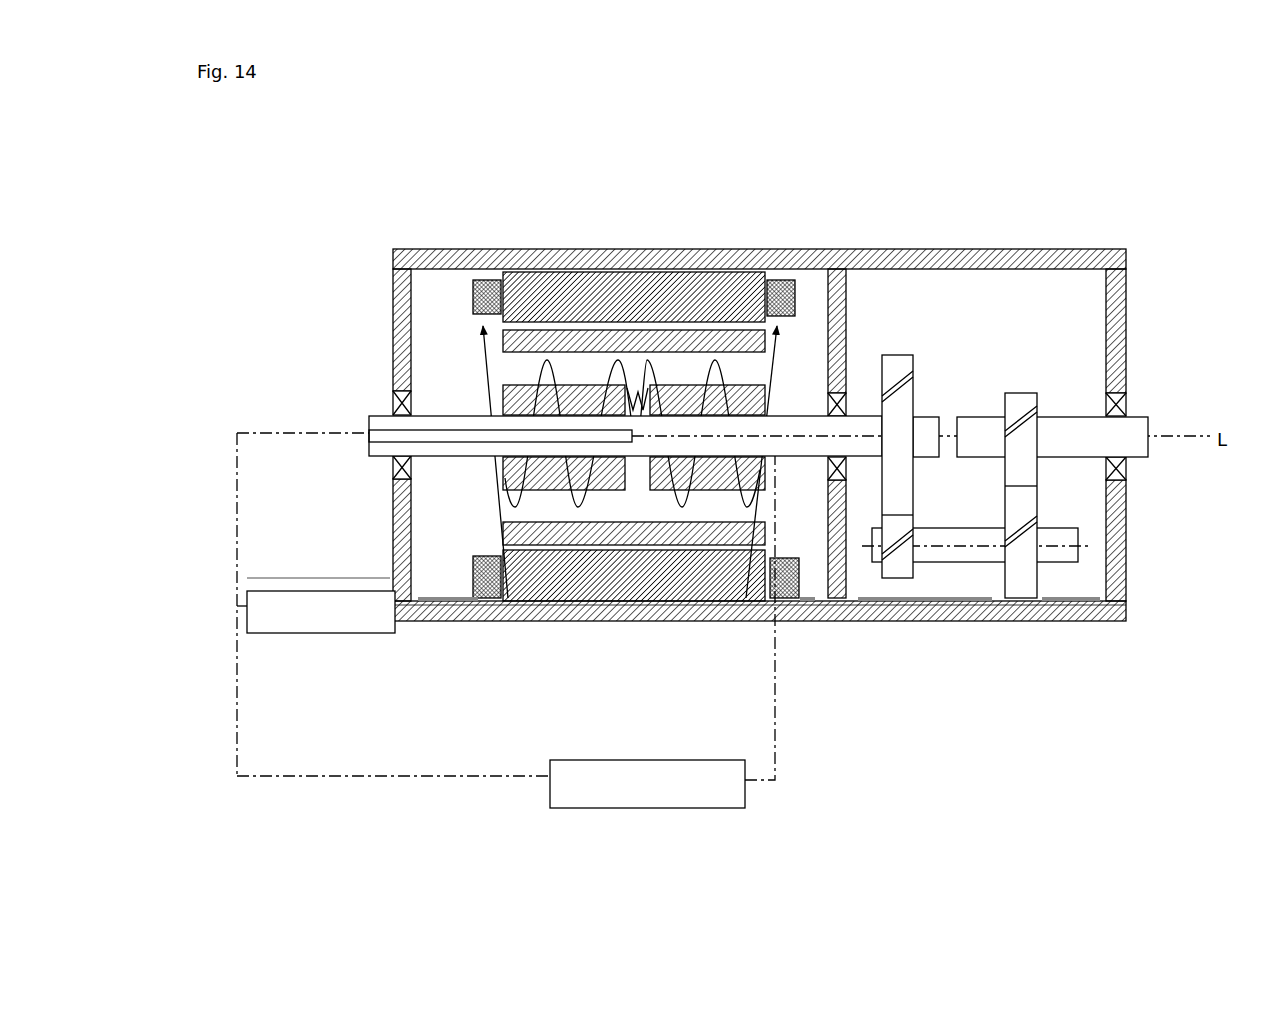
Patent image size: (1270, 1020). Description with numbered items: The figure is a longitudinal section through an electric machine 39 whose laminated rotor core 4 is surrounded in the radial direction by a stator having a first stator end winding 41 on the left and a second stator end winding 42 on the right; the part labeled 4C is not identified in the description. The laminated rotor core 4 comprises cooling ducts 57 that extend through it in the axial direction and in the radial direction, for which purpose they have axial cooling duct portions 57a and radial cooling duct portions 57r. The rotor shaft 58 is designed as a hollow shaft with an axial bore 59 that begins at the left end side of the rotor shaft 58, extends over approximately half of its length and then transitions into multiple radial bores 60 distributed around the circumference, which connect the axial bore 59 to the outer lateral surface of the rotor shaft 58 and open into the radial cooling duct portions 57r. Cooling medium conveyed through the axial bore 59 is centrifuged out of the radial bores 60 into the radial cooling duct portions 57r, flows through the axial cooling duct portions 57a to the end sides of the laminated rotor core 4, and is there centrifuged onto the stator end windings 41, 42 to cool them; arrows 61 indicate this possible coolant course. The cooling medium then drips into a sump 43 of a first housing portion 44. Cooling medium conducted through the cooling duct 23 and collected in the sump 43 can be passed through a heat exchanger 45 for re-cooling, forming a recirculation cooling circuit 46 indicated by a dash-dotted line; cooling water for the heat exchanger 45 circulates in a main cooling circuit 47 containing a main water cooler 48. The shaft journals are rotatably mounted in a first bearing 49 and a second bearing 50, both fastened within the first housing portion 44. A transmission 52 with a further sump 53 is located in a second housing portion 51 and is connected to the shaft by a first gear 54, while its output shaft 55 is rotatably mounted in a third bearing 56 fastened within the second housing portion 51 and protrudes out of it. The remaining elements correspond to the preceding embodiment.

The electric machine 39 is at (1076, 155).
The laminated rotor core 4 is at (606, 388).
The coil 4C is at (656, 292).
The first stator end winding 41 is at (473, 290).
The second stator end winding 42 is at (787, 280).
The sump 43 is at (430, 596).
The first housing portion 44 is at (785, 622).
The heat exchanger 45 is at (316, 605).
The recirculation cooling circuit 46 is at (236, 488).
The main cooling circuit 47 is at (238, 723).
The main water cooler 48 is at (647, 784).
The first bearing 49 is at (412, 403).
The second bearing 50 is at (829, 406).
The second housing portion 51 is at (956, 621).
The transmission 52 is at (1035, 395).
The further sump 53 is at (1062, 588).
The first gear 54 is at (896, 375).
The output shaft 55 is at (1132, 430).
The third bearing 56 is at (1121, 468).
The cooling ducts 57 is at (625, 469).
The axial cooling duct portions 57a is at (510, 358).
The radial cooling duct portions 57r is at (641, 464).
The rotor shaft 58 is at (383, 446).
The axial bore 59 is at (372, 418).
The radial bores 60 is at (632, 447).
The arrows 61 is at (630, 382).
The cooling duct 23 is at (362, 437).